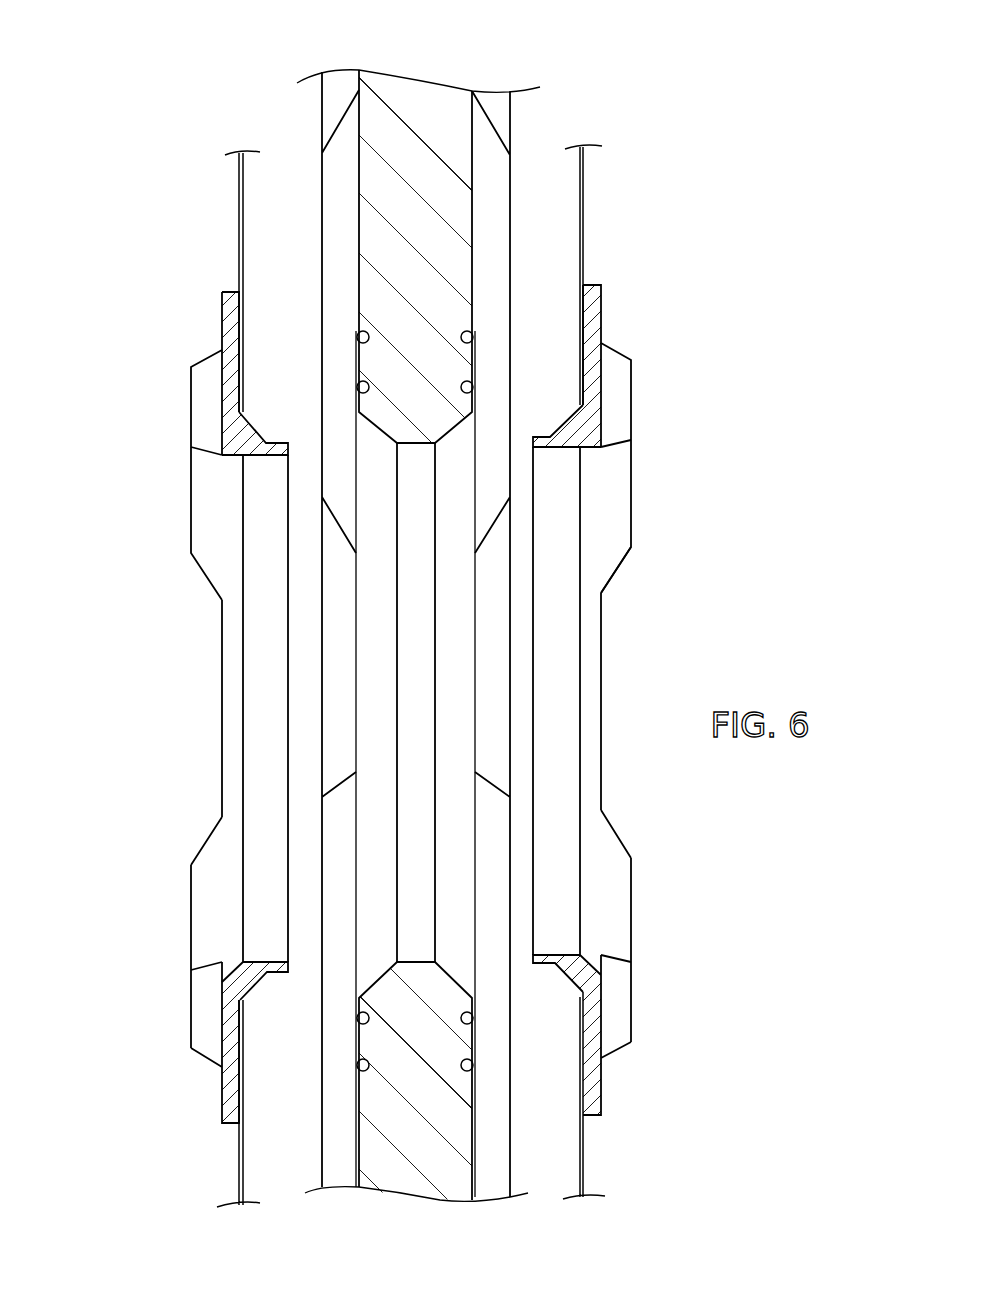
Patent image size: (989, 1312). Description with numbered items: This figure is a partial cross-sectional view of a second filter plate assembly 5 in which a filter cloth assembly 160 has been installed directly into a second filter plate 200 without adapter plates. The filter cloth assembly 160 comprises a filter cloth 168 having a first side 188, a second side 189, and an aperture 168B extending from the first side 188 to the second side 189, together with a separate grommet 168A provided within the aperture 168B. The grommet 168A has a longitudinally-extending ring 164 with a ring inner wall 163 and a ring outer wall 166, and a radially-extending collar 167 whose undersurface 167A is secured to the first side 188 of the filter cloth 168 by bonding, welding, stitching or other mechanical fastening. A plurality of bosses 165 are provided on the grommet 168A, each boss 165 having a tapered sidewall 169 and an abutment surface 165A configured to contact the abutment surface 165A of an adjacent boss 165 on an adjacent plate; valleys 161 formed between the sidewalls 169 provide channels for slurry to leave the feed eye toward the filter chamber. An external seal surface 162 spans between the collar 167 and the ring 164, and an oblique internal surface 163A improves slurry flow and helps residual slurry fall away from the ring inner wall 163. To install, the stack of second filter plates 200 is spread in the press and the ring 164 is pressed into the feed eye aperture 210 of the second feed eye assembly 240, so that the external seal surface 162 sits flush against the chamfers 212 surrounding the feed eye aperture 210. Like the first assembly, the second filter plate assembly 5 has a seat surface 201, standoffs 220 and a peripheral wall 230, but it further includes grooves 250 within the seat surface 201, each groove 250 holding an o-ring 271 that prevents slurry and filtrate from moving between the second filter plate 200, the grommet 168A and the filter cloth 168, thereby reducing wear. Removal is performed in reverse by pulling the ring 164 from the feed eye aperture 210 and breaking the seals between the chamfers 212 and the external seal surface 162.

The second filter plate assembly 5 is at (128, 70).
The filter cloth assembly 160 is at (222, 1155).
The valley 161 is at (601, 627).
The external seal surface 162 is at (570, 423).
The ring inner wall 163 is at (547, 952).
The oblique internal surface 163A is at (603, 885).
The ring 164 is at (543, 447).
The boss 165 is at (631, 512).
The abutment surface 165A is at (631, 460).
The ring outer wall 166 is at (540, 965).
The collar 167 is at (593, 320).
The undersurface 167A is at (239, 355).
The filter cloth 168 is at (583, 210).
The grommet 168A is at (243, 440).
The aperture 168B is at (240, 1003).
The sidewall 169 is at (615, 823).
The first side 188 is at (240, 220).
The second side 189 is at (240, 237).
The second filter plate 200 is at (386, 650).
The seat surface 201 is at (357, 1168).
The feed eye aperture 210 is at (415, 705).
The chamfer 212 is at (455, 595).
The standoff 220 is at (495, 172).
The peripheral wall 230 is at (495, 112).
The second feed eye assembly 240 is at (732, 540).
The groove 250 is at (460, 1060).
The o-ring 271 is at (361, 1065).